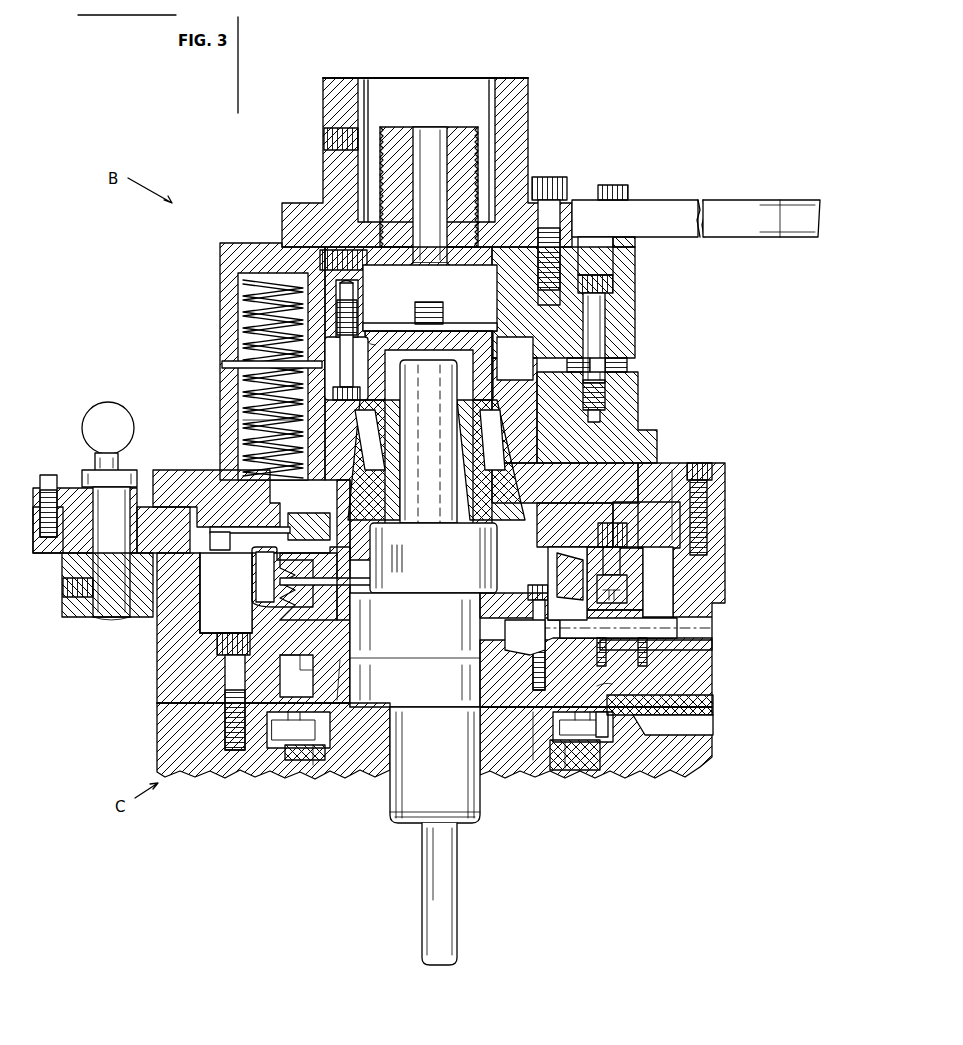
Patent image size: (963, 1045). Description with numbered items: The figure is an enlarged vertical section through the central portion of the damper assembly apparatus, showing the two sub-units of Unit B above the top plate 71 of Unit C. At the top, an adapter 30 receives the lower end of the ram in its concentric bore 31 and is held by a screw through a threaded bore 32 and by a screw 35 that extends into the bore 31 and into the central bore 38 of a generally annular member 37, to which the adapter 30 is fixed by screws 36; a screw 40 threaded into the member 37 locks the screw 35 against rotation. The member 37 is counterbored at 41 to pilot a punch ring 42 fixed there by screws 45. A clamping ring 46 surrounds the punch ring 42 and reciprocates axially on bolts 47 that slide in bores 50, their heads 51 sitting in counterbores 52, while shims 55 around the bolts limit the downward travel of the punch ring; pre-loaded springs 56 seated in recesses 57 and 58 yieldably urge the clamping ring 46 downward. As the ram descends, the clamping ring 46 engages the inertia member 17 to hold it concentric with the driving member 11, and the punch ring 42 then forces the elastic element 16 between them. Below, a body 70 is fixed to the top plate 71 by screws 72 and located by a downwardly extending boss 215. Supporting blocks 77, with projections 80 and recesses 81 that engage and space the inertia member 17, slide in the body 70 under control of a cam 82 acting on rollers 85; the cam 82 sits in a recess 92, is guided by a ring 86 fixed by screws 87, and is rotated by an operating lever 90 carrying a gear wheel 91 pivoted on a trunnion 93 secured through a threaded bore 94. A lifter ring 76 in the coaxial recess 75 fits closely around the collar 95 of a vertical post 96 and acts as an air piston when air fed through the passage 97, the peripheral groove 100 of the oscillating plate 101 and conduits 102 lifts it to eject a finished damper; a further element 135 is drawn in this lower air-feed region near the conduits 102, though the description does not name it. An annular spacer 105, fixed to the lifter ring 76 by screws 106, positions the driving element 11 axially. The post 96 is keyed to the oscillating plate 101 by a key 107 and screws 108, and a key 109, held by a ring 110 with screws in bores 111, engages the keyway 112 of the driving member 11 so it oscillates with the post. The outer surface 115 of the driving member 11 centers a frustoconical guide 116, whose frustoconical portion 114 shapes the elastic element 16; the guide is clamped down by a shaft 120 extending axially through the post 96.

The driving member 11 is at (390, 489).
The elastic element 16 is at (330, 550).
The inertia member 17 is at (306, 517).
The adapter 30 is at (522, 106).
The concentric bore 31 is at (466, 79).
The threaded bore 32 is at (335, 136).
The screw 35 is at (458, 128).
The screws 36 is at (546, 177).
The annular member 37 is at (230, 248).
The central bore 38 is at (472, 316).
The screw 40 is at (320, 250).
The counterbore 41 is at (340, 337).
The punch ring 42 is at (522, 371).
The screws 45 is at (357, 320).
The clamping ring 46 is at (638, 393).
The bolts 47 is at (598, 331).
The bores 50 is at (600, 347).
The bolt heads 51 is at (598, 278).
The counterbores 52 is at (605, 252).
The shims 55 is at (620, 368).
The pre-loaded springs 56 is at (243, 367).
The recess 57 is at (240, 291).
The recess 58 is at (243, 421).
The body 70 is at (157, 667).
The top plate 71 is at (160, 745).
The screws 72 is at (233, 645).
The coaxial recess 75 is at (298, 677).
The lifter ring 76 is at (337, 700).
The supporting blocks 77 is at (232, 607).
The projections 80 is at (262, 551).
The recesses 81 is at (258, 545).
The cam 82 is at (212, 517).
The rollers 85 is at (222, 552).
The ring 86 is at (660, 463).
The screws 87 is at (700, 466).
The operating lever 90 is at (70, 490).
The gear wheel 91 is at (60, 547).
The recess 92 is at (672, 470).
The trunnion 93 is at (116, 559).
The threaded bore 94 is at (70, 600).
The collar 95 is at (406, 688).
The vertical post 96 is at (478, 790).
The passage 97 is at (652, 725).
The peripheral groove 100 is at (600, 737).
The oscillating plate 101 is at (533, 760).
The conduits 102 is at (285, 760).
The spacer member 105 is at (338, 617).
The screws 106 is at (530, 612).
The key 107 is at (392, 817).
The screws 108 is at (528, 642).
The key 109 is at (412, 415).
The ring 110 is at (446, 572).
The bores 111 is at (406, 559).
The keyway 112 is at (408, 368).
The frustoconical portion 114 is at (346, 428).
The outer surface 115 is at (493, 418).
The guide 116 is at (470, 412).
The shaft 120 is at (450, 907).
The fitting 135 is at (313, 765).
The boss 215 is at (597, 690).